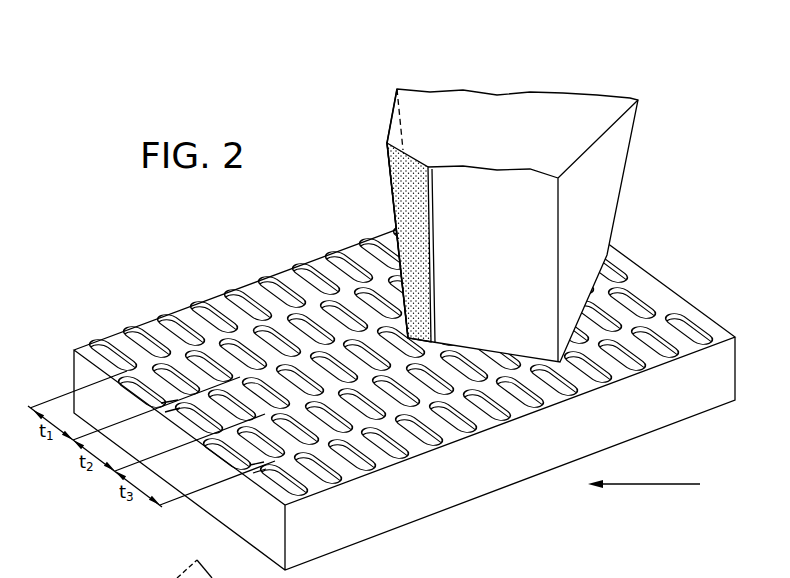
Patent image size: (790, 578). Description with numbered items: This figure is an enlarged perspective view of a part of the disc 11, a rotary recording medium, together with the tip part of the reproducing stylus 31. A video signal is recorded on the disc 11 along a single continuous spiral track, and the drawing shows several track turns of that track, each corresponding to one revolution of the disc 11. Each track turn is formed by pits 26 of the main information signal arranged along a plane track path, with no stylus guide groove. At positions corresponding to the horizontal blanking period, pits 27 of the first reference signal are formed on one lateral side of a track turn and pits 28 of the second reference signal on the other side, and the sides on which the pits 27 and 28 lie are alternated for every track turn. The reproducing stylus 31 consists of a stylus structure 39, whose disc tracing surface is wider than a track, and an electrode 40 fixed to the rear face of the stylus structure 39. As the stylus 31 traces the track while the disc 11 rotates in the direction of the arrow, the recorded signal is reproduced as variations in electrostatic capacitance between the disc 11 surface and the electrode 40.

The disc 11 is at (152, 321).
The pits of the main information signal 26 is at (244, 297).
The pits of the first reference signal 27 is at (310, 300).
The pits of the second reference signal 28 is at (171, 409).
The reproducing stylus 31 is at (390, 128).
The stylus structure 39 is at (612, 175).
The electrode 40 is at (398, 178).